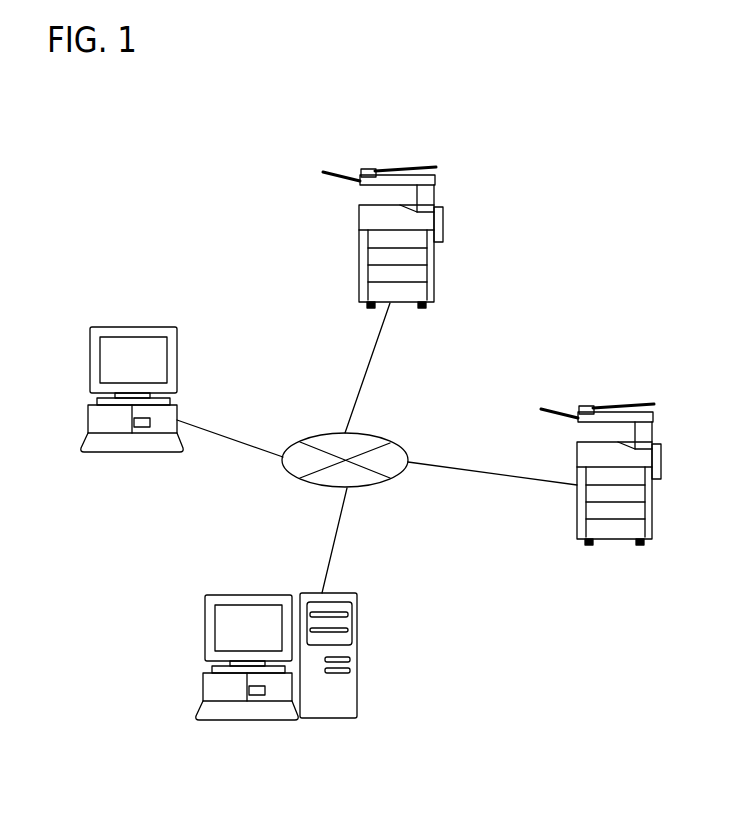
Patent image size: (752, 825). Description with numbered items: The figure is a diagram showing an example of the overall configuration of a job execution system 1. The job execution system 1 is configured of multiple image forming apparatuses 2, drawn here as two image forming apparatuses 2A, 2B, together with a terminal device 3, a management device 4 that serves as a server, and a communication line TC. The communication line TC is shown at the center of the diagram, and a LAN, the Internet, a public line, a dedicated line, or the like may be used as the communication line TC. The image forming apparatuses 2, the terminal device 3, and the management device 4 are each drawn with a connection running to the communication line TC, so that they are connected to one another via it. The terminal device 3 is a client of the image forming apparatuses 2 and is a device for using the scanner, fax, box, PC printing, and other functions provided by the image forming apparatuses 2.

The job execution system 1 is at (356, 114).
The image forming apparatus 2 is at (460, 356).
The image forming apparatus 2A is at (359, 269).
The image forming apparatus 2B is at (577, 516).
The terminal device 3 is at (90, 354).
The management device 4 is at (205, 616).
The communication line TC is at (304, 432).